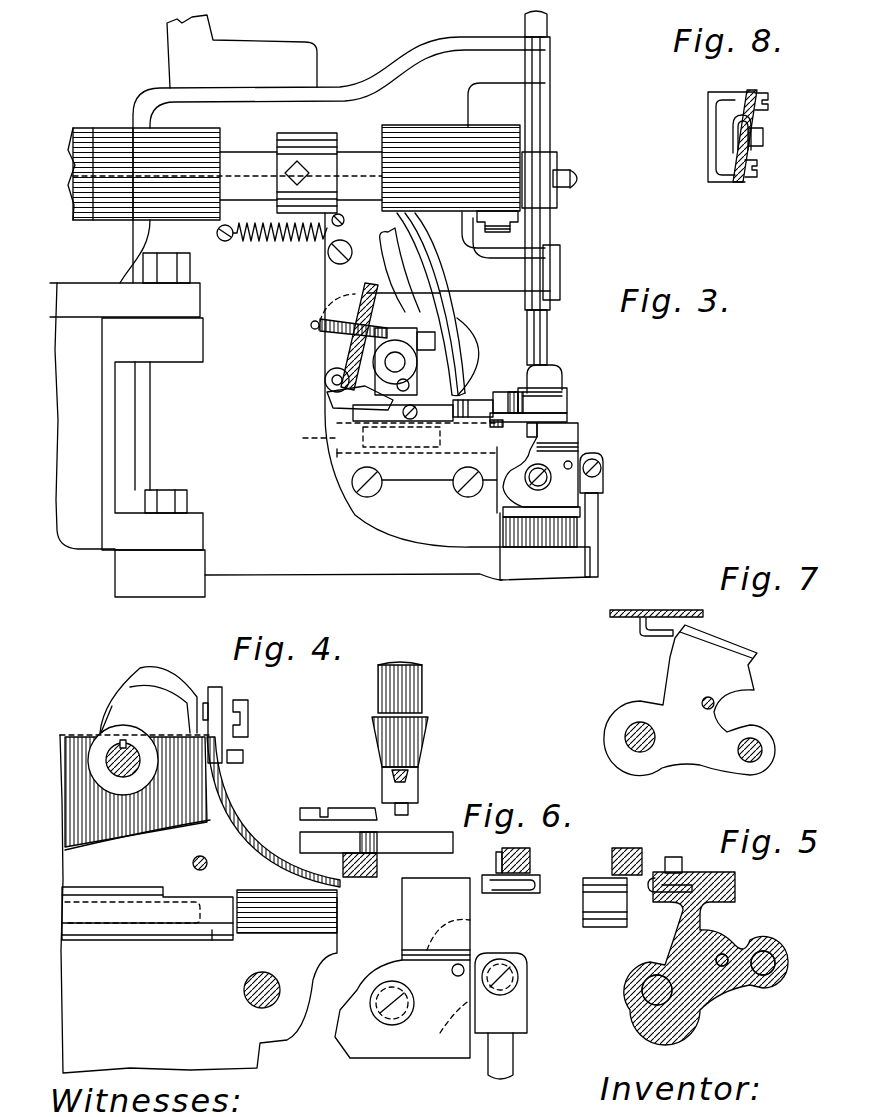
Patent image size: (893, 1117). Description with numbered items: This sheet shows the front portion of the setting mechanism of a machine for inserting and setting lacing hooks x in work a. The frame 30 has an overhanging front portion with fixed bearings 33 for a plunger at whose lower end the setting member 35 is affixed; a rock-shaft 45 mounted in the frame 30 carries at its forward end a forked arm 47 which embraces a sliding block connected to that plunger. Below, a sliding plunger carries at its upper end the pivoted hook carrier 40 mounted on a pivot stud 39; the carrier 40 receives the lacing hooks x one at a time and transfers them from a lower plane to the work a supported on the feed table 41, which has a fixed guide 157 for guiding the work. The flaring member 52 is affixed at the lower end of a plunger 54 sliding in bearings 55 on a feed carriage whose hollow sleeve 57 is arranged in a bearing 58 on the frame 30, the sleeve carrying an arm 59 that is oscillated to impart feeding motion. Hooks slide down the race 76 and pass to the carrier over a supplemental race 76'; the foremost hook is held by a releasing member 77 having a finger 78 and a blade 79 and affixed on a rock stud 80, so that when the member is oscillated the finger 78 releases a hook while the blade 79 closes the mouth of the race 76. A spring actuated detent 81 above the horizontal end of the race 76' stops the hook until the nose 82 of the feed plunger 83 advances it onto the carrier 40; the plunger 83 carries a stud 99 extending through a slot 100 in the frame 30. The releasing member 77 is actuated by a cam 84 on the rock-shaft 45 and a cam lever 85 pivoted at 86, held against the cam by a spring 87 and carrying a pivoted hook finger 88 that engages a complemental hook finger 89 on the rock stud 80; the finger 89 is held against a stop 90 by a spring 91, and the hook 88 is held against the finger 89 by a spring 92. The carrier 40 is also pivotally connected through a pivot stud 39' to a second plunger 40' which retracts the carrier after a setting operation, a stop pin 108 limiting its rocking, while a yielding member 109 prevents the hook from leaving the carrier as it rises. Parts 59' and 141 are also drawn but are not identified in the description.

In FIG. 3, the frame 30 is at (303, 563).
In FIG. 4, the frame 30 is at (247, 1053).
In FIG. 3, the fixed bearings 33 is at (500, 256).
In FIG. 3, the setting member 35 is at (548, 345).
In FIG. 4, the setting member 35 is at (407, 753).
In FIG. 7, the pivot stud 39 is at (611, 730).
In FIG. 5, the pivot stud 39 is at (628, 990).
In FIG. 7, the pivot stud 39' is at (775, 751).
In FIG. 5, the pivot stud 39' is at (783, 981).
In FIG. 3, the arm 59 is at (548, 484).
In FIG. 4, the arm 59 is at (368, 1001).
In FIG. 3, the pivot screw 59' is at (629, 473).
In FIG. 4, the pivot screw 59' is at (520, 978).
In FIG. 3, the hook carrier 40 is at (540, 465).
In FIG. 7, the hook carrier 40 is at (689, 700).
In FIG. 5, the hook carrier 40 is at (706, 958).
In FIG. 4, the hook carrier 40 is at (402, 968).
In FIG. 3, the second plunger 40' is at (614, 535).
In FIG. 4, the second plunger 40' is at (517, 1016).
In FIG. 3, the feed table 41 is at (568, 398).
In FIG. 3, the rock-shaft 45 is at (247, 162).
In FIG. 3, the forked arm 47 is at (497, 230).
In FIG. 4, the flaring member 52 is at (420, 773).
In FIG. 3, the plunger 54 is at (552, 230).
In FIG. 4, the plunger 54 is at (407, 678).
In FIG. 3, the bearings 55 is at (565, 305).
In FIG. 4, the bearings 55 is at (410, 808).
In FIG. 3, the hollow sleeve 57 is at (542, 550).
In FIG. 3, the bearing 58 is at (530, 517).
In FIG. 3, the race 76 is at (431, 304).
In FIG. 8, the race 76 is at (739, 169).
In FIG. 3, the supplemental race 76' is at (583, 409).
In FIG. 6, the supplemental race 76' is at (514, 899).
In FIG. 4, the supplemental race 76' is at (273, 812).
In FIG. 4, the releasing member 77 is at (112, 708).
In FIG. 4, the finger 78 is at (223, 755).
In FIG. 4, the blade 79 is at (157, 677).
In FIG. 3, the rock stud 80 is at (405, 362).
In FIG. 4, the rock stud 80 is at (118, 777).
In FIG. 5, the spring actuated detent 81 is at (612, 860).
In FIG. 6, the spring actuated detent 81 is at (531, 858).
In FIG. 4, the spring actuated detent 81 is at (378, 865).
In FIG. 3, the nose 82 is at (460, 427).
In FIG. 5, the nose 82 is at (649, 875).
In FIG. 4, the nose 82 is at (287, 911).
In FIG. 5, the plunger 83 is at (600, 928).
In FIG. 4, the plunger 83 is at (132, 908).
In FIG. 3, the cam 84 is at (297, 135).
In FIG. 3, the cam lever 85 is at (325, 290).
In FIG. 3, the pivot 86 is at (328, 255).
In FIG. 3, the spring 87 is at (262, 222).
In FIG. 3, the pivoted hook finger 88 is at (333, 405).
In FIG. 3, the complemental hook finger 89 is at (324, 386).
In FIG. 3, the stop 90 is at (421, 393).
In FIG. 3, the spring 91 is at (314, 331).
In FIG. 3, the spring 92 is at (376, 313).
In FIG. 3, the stud 99 is at (386, 438).
In FIG. 3, the slot 100 is at (418, 448).
In FIG. 4, the slot 100 is at (212, 940).
In FIG. 3, the stop pin 108 is at (573, 465).
In FIG. 7, the stop pin 108 is at (715, 703).
In FIG. 5, the stop pin 108 is at (725, 955).
In FIG. 4, the stop pin 108 is at (462, 966).
In FIG. 3, the yielding member 109 is at (509, 405).
In FIG. 3, the hook 141 is at (563, 377).
In FIG. 4, the hook 141 is at (376, 842).
In FIG. 3, the fixed guide 157 is at (469, 356).
In FIG. 4, the fixed guide 157 is at (350, 808).
In FIG. 8, the lacing hook x is at (764, 137).
In FIG. 7, the lacing hook x is at (651, 608).
In FIG. 5, the lacing hook x is at (674, 855).
In FIG. 6, the lacing hook x is at (492, 872).
In FIG. 4, the lacing hook x is at (240, 762).
In FIG. 7, the work a is at (610, 613).